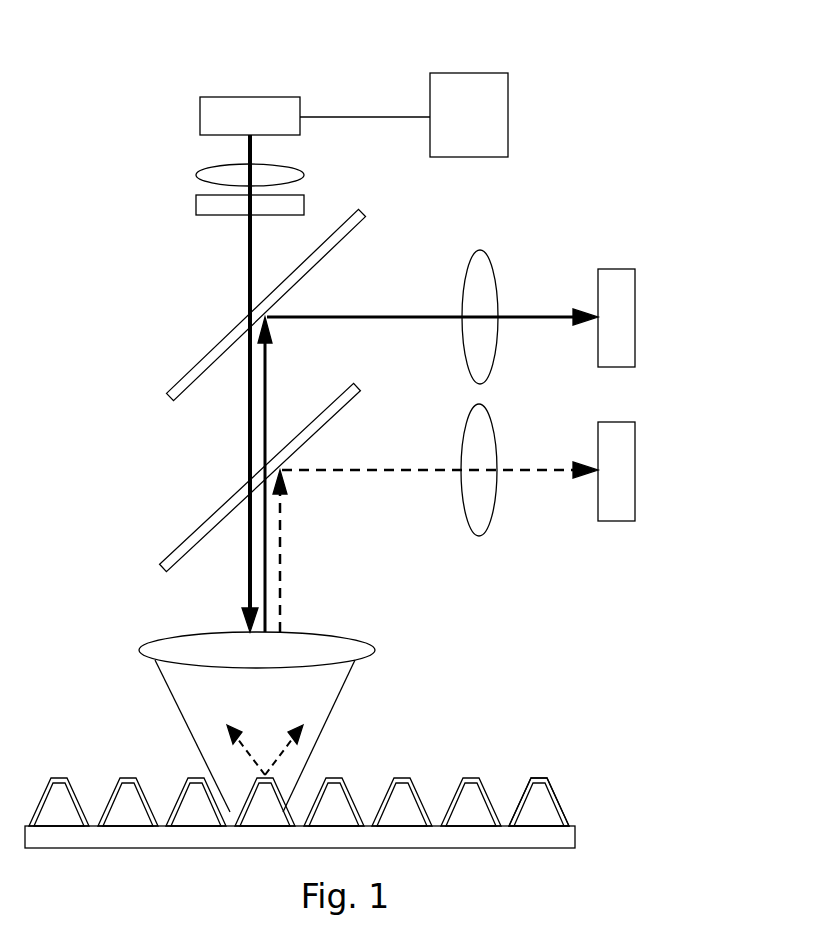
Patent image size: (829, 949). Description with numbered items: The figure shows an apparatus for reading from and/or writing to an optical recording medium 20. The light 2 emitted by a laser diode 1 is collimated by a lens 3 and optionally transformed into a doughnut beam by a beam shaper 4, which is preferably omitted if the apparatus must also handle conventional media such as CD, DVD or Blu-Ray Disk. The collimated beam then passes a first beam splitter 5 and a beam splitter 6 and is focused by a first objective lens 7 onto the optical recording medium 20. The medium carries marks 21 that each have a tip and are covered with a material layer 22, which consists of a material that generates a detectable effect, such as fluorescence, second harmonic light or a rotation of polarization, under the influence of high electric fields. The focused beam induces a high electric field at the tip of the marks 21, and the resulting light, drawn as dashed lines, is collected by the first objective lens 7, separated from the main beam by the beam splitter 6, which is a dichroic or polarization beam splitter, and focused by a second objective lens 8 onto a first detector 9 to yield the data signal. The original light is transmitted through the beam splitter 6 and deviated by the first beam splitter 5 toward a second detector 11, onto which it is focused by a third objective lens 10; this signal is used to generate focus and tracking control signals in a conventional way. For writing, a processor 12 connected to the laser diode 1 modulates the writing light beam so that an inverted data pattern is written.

The laser diode 1 is at (200, 115).
The light 2 is at (246, 258).
The lens 3 is at (196, 173).
The beam shaper 4 is at (196, 208).
The first beam splitter 5 is at (183, 370).
The beam splitter 6 is at (175, 543).
The first objective lens 7 is at (363, 645).
The second objective lens 8 is at (465, 520).
The first detector 9 is at (613, 522).
The third objective lens 10 is at (470, 260).
The second detector 11 is at (615, 269).
The processor 12 is at (430, 90).
The optical recording medium 20 is at (578, 826).
The marks 21 is at (120, 778).
The material layer 22 is at (546, 779).